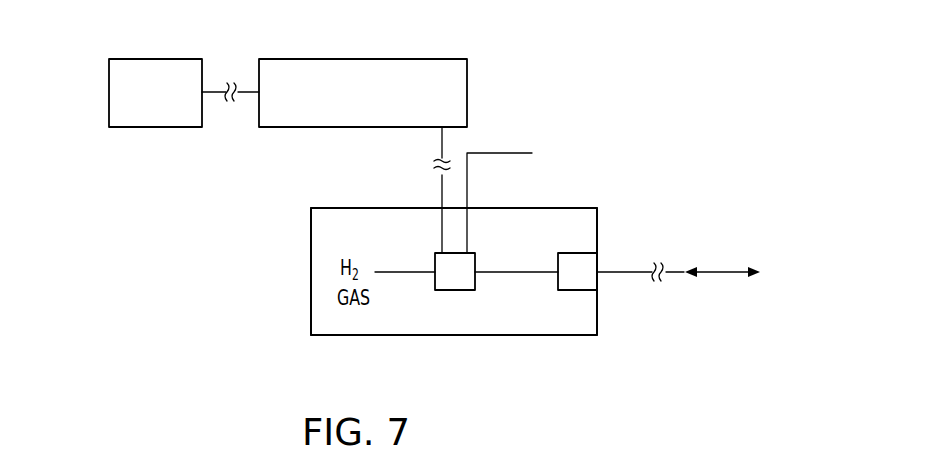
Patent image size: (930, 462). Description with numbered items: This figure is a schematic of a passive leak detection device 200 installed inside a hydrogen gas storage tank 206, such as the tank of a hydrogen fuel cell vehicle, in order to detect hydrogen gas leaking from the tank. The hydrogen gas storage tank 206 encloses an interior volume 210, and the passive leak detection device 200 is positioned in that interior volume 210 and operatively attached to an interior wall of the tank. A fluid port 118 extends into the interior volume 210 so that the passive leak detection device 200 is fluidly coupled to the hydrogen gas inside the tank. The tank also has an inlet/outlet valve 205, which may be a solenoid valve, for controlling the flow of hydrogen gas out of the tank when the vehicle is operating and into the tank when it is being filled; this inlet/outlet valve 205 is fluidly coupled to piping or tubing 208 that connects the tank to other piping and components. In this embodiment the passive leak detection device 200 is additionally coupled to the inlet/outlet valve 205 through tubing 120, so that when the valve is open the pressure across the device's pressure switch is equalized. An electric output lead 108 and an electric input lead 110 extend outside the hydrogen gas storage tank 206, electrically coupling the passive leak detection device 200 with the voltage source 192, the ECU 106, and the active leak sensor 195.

The active leak sensor 195 is at (109, 92).
The ECU 106 is at (467, 83).
The electric output lead 108 is at (512, 153).
The voltage source 192 is at (683, 152).
The electric input lead 110 is at (442, 183).
The hydrogen gas storage tank 206 is at (322, 198).
The interior volume 210 is at (333, 244).
The fluid port 118 is at (406, 270).
The passive leak detection device 200 is at (440, 299).
The tubing 120 is at (521, 270).
The inlet/outlet valve 205 is at (558, 283).
The piping or tubing 208 is at (627, 274).